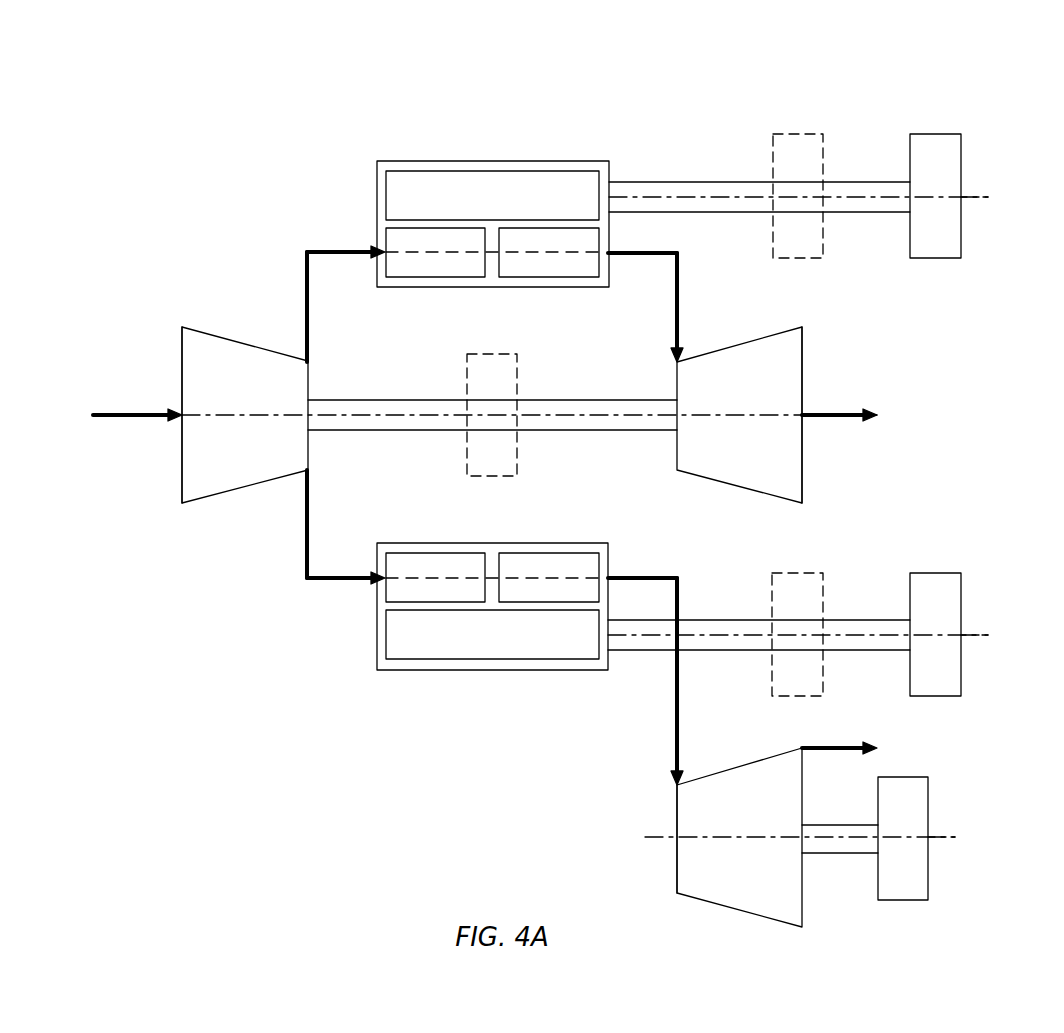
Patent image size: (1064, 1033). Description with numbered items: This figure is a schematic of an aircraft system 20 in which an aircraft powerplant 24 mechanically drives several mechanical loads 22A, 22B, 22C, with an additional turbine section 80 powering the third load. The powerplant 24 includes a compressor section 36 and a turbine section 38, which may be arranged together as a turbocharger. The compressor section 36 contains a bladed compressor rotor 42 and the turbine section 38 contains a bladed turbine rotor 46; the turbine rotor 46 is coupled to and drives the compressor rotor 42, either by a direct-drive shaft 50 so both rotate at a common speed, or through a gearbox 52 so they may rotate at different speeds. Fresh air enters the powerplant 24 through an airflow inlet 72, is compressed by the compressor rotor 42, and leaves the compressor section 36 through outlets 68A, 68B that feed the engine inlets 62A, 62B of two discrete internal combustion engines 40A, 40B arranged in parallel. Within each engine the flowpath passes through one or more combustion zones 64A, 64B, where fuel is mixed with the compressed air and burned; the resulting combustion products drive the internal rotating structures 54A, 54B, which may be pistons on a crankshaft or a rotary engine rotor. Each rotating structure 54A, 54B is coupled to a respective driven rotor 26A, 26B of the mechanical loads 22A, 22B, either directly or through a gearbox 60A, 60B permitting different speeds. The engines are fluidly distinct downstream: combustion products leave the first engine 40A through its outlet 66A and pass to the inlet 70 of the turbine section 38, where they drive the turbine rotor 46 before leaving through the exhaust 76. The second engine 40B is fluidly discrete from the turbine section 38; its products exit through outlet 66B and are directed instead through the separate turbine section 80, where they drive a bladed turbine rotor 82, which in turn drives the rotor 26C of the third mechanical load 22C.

The aircraft system 20 is at (187, 103).
The aircraft powerplant 24 is at (297, 115).
The compressor section 36 is at (206, 312).
The turbine section 38 is at (812, 322).
The first internal combustion engine 40A is at (612, 125).
The second internal combustion engine 40B is at (381, 693).
The compressor rotor 42 is at (182, 470).
The turbine rotor 46 is at (810, 450).
The shaft 50 is at (384, 432).
The gearbox 52 is at (517, 447).
The first rotating structure 54A is at (476, 171).
The second rotating structure 54B is at (465, 660).
The first gearbox 60A is at (808, 134).
The second gearbox 60B is at (823, 598).
The first engine inlet 62A is at (384, 250).
The second engine inlet 62B is at (384, 580).
The first combustion zones 64A is at (429, 277).
The second combustion zones 64B is at (435, 553).
The first engine outlet 66A is at (610, 256).
The second engine outlet 66B is at (612, 575).
The first compressor section outlet 68A is at (305, 358).
The second compressor section outlet 68B is at (305, 478).
The turbine section inlet 70 is at (677, 362).
The airflow inlet 72 is at (112, 414).
The exhaust 76 is at (845, 412).
The additional turbine section 80 is at (720, 750).
The additional turbine rotor 82 is at (677, 863).
The first mechanical load 22A is at (958, 118).
The second mechanical load 22B is at (957, 555).
The third mechanical load 22C is at (940, 790).
The first driven rotor 26A is at (961, 228).
The second driven rotor 26B is at (961, 668).
The third driven rotor 26C is at (928, 872).